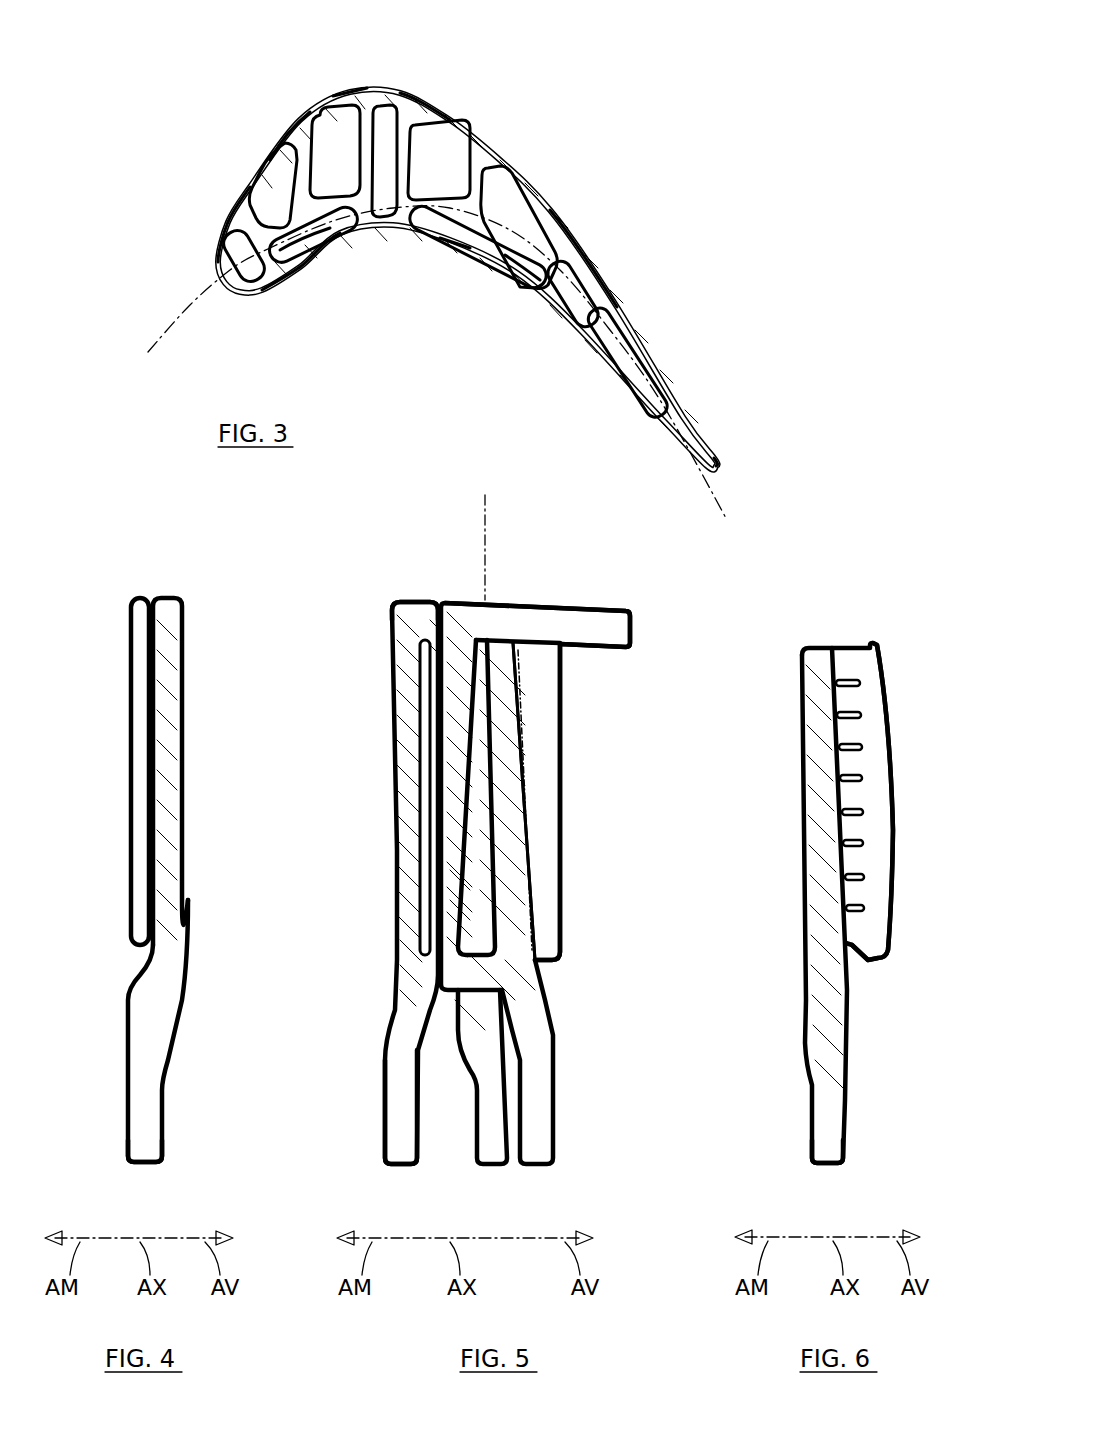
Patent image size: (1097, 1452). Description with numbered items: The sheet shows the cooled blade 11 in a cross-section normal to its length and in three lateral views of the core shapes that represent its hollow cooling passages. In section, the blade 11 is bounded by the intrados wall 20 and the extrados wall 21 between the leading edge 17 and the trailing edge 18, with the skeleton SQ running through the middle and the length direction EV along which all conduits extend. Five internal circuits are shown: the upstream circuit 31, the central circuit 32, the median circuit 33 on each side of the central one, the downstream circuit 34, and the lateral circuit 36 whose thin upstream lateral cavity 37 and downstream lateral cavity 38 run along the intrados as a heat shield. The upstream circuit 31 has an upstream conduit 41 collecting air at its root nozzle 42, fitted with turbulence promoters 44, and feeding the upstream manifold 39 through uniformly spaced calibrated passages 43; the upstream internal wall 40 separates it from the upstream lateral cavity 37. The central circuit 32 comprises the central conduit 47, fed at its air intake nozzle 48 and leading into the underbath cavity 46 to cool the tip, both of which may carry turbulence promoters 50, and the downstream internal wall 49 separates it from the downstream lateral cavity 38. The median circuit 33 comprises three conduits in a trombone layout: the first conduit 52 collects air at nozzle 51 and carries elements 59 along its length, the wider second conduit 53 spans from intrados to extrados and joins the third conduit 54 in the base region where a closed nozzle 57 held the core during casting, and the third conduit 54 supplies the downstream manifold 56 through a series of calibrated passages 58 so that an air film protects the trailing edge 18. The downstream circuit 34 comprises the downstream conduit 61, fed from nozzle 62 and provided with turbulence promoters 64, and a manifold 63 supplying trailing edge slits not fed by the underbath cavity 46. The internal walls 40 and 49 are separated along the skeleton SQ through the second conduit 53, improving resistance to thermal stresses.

In FIG. 3, the blade 11 is at (122, 78).
In FIG. 3, the leading edge 17 is at (222, 264).
In FIG. 3, the trailing edge 18 is at (722, 468).
In FIG. 3, the intrados wall 20 is at (320, 232).
In FIG. 3, the extrados wall 21 is at (297, 125).
In FIG. 3, the skeleton SQ is at (412, 363).
In FIG. 5, the length direction EV is at (519, 547).
In FIG. 3, the upstream circuit 31 is at (215, 172).
In FIG. 4, the upstream circuit 31 is at (98, 578).
In FIG. 3, the central circuit 32 is at (476, 103).
In FIG. 5, the central circuit 32 is at (456, 586).
In FIG. 3, the median circuit 33 is at (352, 80).
In FIG. 5, the median circuit 33 is at (382, 588).
In FIG. 3, the downstream circuit 34 is at (664, 322).
In FIG. 6, the downstream circuit 34 is at (898, 632).
In FIG. 3, the lateral circuit 36 is at (360, 262).
In FIG. 3, the upstream lateral cavity 37 is at (290, 236).
In FIG. 3, the downstream lateral cavity 38 is at (455, 262).
In FIG. 3, the upstream manifold 39 is at (243, 266).
In FIG. 4, the upstream manifold 39 is at (140, 692).
In FIG. 3, the upstream internal wall 40 is at (305, 230).
In FIG. 3, the upstream conduit 41 is at (273, 185).
In FIG. 4, the upstream conduit 41 is at (170, 805).
In FIG. 4, the nozzle 42 is at (140, 1150).
In FIG. 4, the calibrated passages 43 is at (150, 805).
In FIG. 4, the turbulence promoters 44 is at (185, 870).
In FIG. 5, the underbath cavity 46 is at (556, 628).
In FIG. 3, the central conduit 47 is at (439, 160).
In FIG. 5, the central conduit 47 is at (468, 838).
In FIG. 5, the air intake nozzle 48 is at (492, 1150).
In FIG. 3, the downstream internal wall 49 is at (521, 286).
In FIG. 5, the turbulence promoters 50 is at (440, 920).
In FIG. 5, the nozzle 51 is at (400, 1150).
In FIG. 3, the first conduit 52 is at (335, 151).
In FIG. 5, the first conduit 52 is at (410, 672).
In FIG. 3, the second conduit 53 is at (385, 175).
In FIG. 5, the second conduit 53 is at (432, 705).
In FIG. 3, the third conduit 54 is at (519, 227).
In FIG. 5, the third conduit 54 is at (520, 885).
In FIG. 3, the downstream manifold 56 is at (580, 278).
In FIG. 5, the downstream manifold 56 is at (540, 693).
In FIG. 5, the nozzle 57 is at (548, 1150).
In FIG. 5, the calibrated passages 58 is at (540, 820).
In FIG. 5, the fibers of first side portion 59 is at (405, 790).
In FIG. 6, the downstream conduit 61 is at (822, 832).
In FIG. 6, the nozzle 62 is at (830, 1150).
In FIG. 6, the manifold 63 is at (870, 730).
In FIG. 6, the turbulence promoters 64 is at (815, 945).